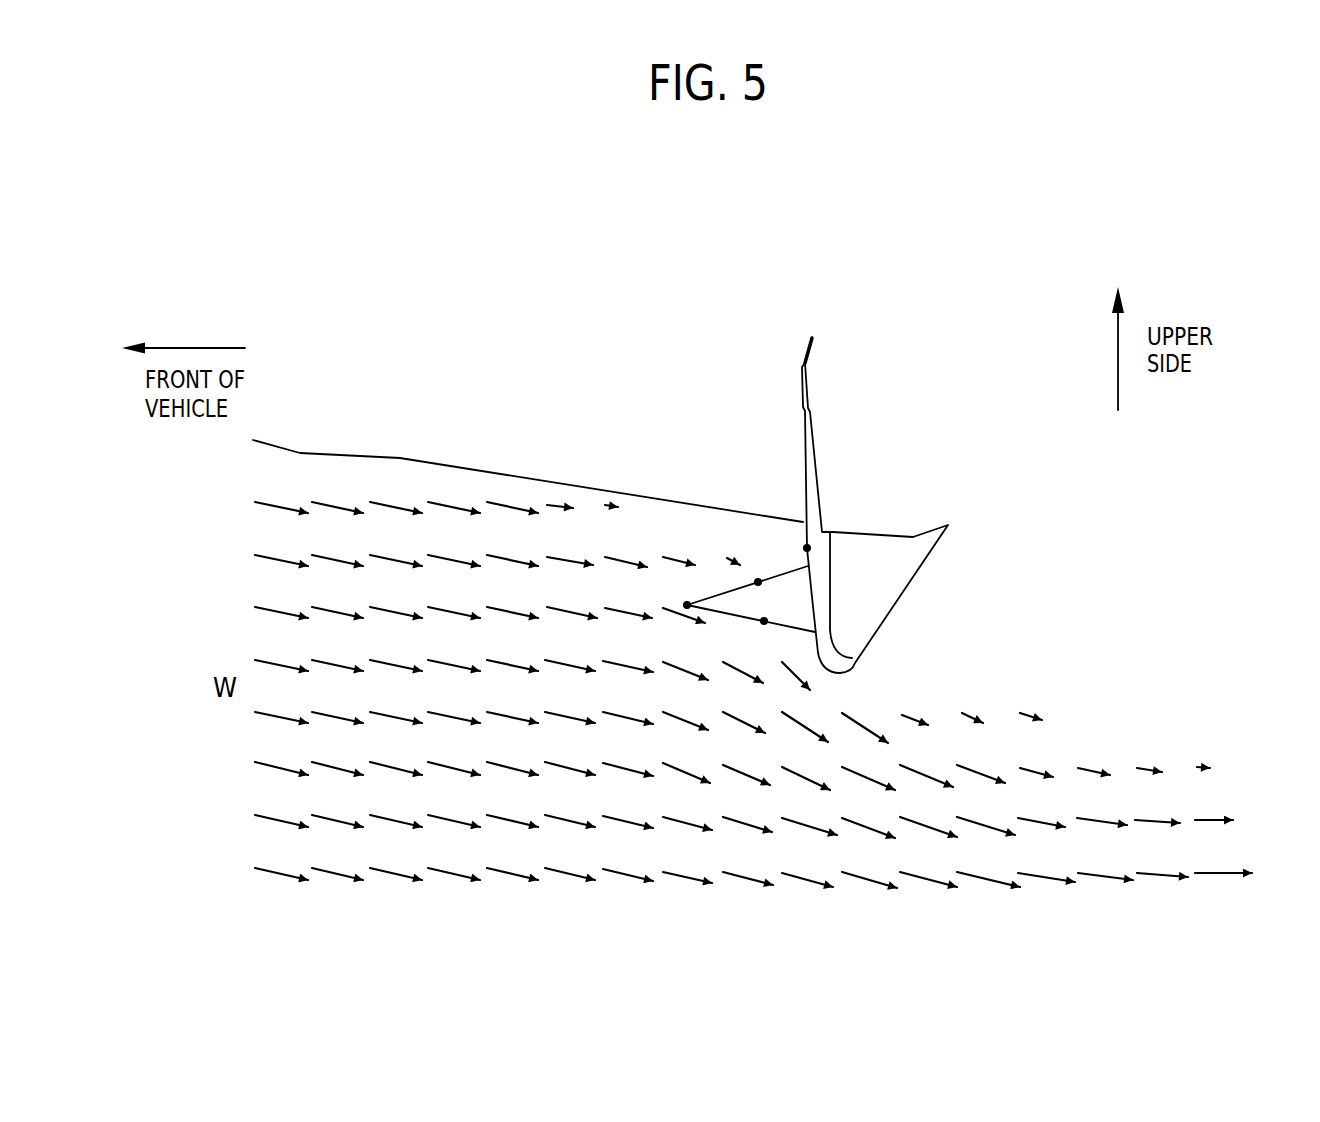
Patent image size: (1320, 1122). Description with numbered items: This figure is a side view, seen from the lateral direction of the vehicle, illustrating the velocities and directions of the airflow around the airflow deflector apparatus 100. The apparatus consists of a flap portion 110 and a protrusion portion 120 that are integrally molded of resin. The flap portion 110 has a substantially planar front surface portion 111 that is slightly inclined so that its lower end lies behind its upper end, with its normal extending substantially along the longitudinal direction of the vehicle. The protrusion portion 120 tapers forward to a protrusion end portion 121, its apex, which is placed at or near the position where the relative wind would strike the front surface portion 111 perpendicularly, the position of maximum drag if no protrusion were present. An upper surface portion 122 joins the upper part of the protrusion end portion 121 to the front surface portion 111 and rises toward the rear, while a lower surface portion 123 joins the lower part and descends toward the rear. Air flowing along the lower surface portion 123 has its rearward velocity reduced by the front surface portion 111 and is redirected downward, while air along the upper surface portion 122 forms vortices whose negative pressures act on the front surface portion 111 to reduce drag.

The airflow deflector apparatus 100 is at (928, 427).
The flap portion 110 is at (858, 515).
The front surface portion 111 is at (807, 548).
The protrusion portion 120 is at (687, 605).
The protrusion end portion 121 is at (707, 568).
The upper surface portion 122 is at (758, 582).
The lower surface portion 123 is at (763, 622).